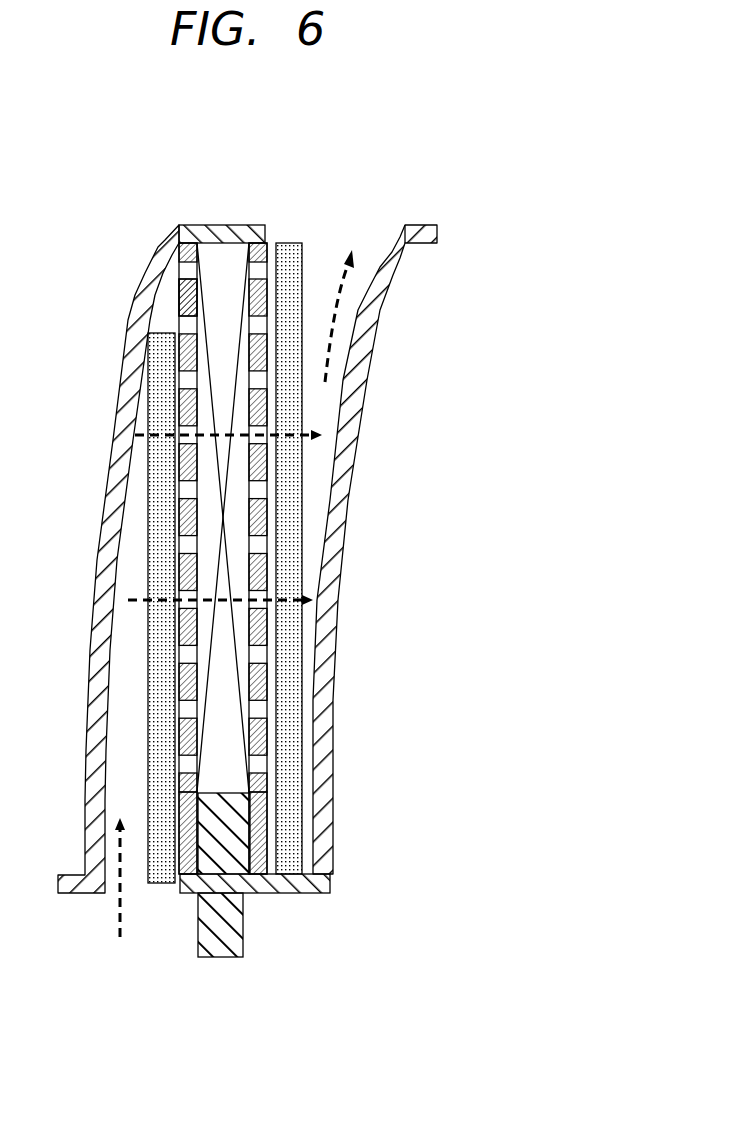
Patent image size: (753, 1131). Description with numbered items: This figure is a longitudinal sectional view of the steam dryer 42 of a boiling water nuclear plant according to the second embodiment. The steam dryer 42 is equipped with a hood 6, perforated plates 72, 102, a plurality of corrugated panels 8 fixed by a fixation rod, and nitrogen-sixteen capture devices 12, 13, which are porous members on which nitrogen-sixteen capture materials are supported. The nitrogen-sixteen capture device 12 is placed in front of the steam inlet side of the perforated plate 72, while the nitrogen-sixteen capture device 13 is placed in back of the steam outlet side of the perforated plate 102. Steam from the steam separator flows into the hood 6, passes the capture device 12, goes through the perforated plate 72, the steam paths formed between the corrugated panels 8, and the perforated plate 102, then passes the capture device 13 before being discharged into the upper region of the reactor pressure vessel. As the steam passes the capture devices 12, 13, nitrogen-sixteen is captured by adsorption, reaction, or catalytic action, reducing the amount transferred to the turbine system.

The steam dryer 42 is at (367, 157).
The hood 6 is at (108, 517).
The corrugated panels 8 is at (217, 265).
The perforated plate 102 is at (261, 272).
The perforated plate 72 is at (180, 302).
The N-16 capture device 12 is at (157, 387).
The N-16 capture device 13 is at (303, 250).